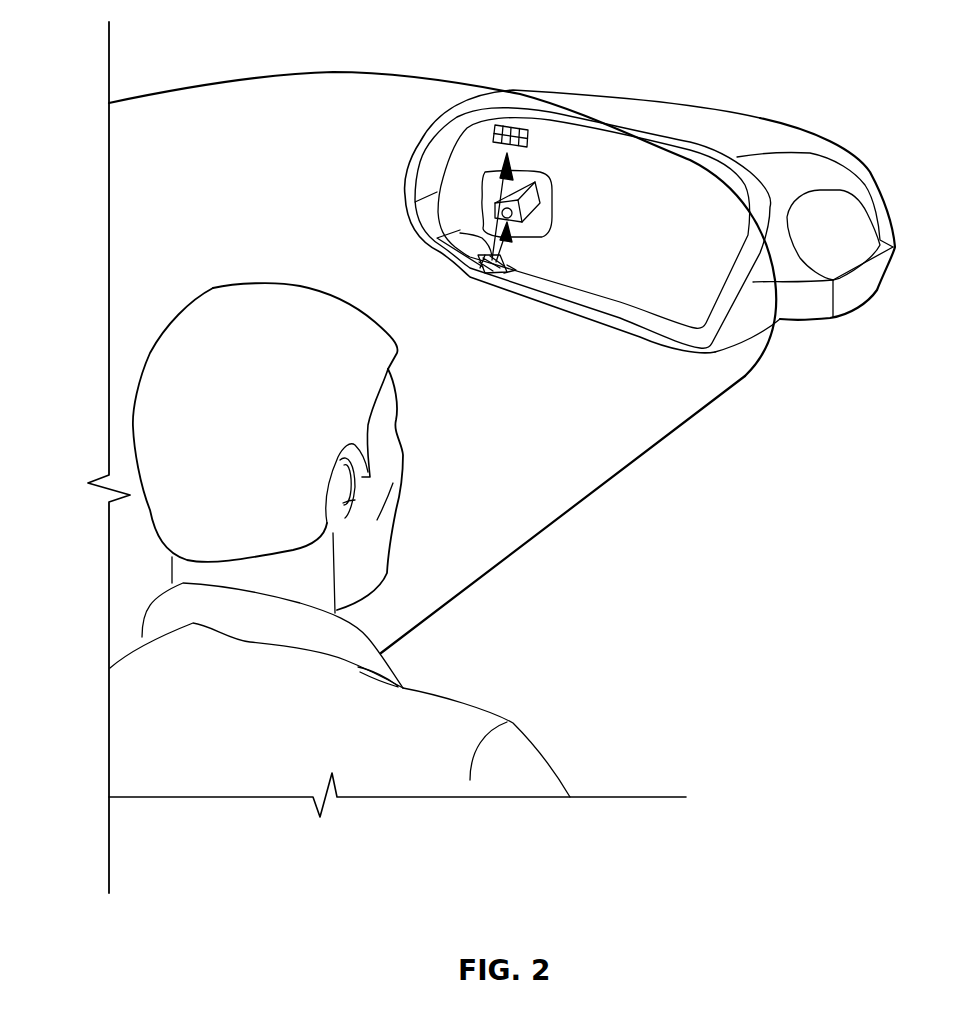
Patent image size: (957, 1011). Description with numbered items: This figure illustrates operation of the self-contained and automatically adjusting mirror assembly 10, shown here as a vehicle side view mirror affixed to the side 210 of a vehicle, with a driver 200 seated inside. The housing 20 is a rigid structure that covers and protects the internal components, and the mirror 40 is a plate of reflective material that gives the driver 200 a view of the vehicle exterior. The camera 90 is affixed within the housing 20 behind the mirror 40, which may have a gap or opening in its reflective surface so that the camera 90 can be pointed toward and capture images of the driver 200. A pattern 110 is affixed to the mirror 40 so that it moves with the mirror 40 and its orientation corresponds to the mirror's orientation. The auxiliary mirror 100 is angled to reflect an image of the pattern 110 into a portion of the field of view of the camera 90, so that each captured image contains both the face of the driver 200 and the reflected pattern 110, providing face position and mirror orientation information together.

The mirror assembly 10 is at (603, 60).
The housing 20 is at (763, 117).
The mirror 40 is at (720, 187).
The camera 90 is at (537, 190).
The auxiliary mirror 100 is at (465, 235).
The pattern 110 is at (530, 140).
The driver 200 is at (170, 383).
The side of a vehicle 210 is at (660, 453).